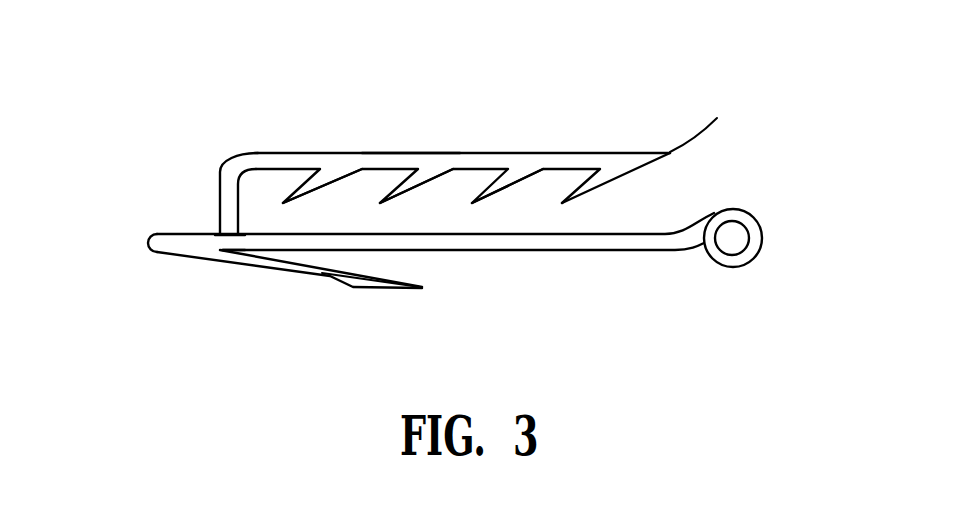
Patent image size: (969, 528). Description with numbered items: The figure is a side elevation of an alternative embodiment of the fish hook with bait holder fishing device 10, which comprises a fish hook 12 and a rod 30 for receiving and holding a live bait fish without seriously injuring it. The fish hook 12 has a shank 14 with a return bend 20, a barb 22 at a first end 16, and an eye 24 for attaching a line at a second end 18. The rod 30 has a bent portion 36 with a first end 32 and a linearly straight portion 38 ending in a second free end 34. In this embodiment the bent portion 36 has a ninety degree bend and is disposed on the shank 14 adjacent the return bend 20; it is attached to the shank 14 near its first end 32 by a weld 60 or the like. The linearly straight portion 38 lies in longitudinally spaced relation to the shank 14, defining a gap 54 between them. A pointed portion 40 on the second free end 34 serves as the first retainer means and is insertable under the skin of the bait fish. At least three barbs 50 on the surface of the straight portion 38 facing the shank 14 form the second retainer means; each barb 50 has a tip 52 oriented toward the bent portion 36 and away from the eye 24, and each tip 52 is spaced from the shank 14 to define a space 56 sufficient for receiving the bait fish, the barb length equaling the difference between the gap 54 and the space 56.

The fish hook with bait holder fishing device 10 is at (547, 101).
The fish hook 12 is at (662, 232).
The shank 14 is at (633, 252).
The first end 16 is at (418, 289).
The second end 18 is at (757, 258).
The return bend 20 is at (148, 242).
The barb 22 is at (362, 289).
The eye 24 is at (735, 237).
The rod 30 is at (299, 152).
The first end 32 is at (230, 230).
The second free end 34 is at (712, 124).
The bent portion 36 is at (220, 175).
The linearly straight portion 38 is at (412, 152).
The pointed portion 40 is at (652, 150).
The barbs 50 is at (297, 189).
The tip 52 is at (288, 204).
The gap 54 is at (531, 192).
The space 56 is at (302, 223).
The weld 60 is at (213, 233).